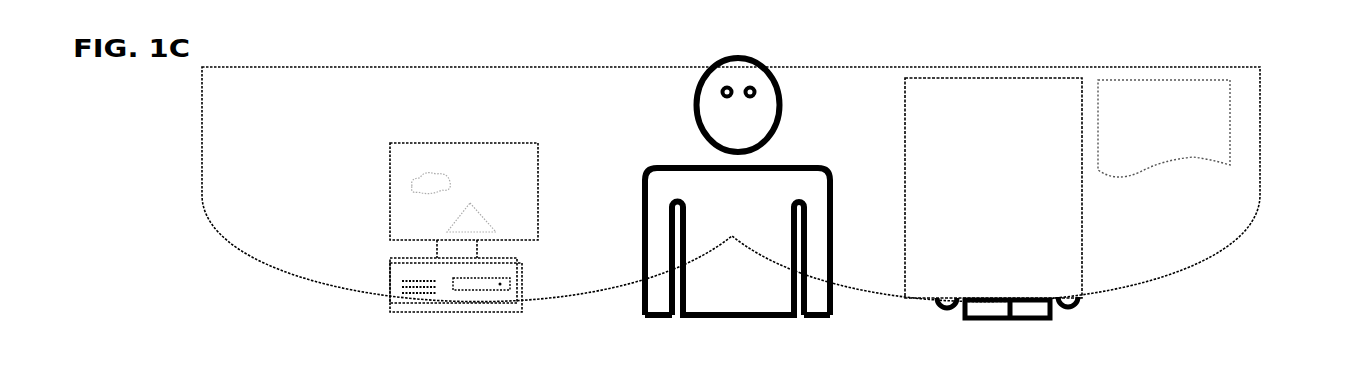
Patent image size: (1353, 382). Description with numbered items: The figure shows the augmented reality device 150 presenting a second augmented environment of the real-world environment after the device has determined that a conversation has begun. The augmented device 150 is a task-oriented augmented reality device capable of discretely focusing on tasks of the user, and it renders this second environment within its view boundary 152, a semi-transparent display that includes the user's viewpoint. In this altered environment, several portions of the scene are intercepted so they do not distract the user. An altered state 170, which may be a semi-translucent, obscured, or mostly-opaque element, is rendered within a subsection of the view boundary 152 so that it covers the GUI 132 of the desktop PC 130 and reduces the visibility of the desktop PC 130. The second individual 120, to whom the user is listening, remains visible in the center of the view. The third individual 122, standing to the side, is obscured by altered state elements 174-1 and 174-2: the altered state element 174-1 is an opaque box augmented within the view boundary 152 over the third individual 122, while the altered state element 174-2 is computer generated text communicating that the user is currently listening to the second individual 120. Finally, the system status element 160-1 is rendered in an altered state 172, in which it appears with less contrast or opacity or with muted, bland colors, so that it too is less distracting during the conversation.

The augmented reality device 150 is at (674, 184).
The view boundary 152 is at (259, 106).
The altered state 170 is at (449, 236).
The GUI 132 is at (372, 181).
The desktop PC 130 is at (540, 270).
The second individual 120 is at (750, 217).
The altered state element 174-1 is at (985, 107).
The altered state element 174-2 is at (992, 222).
The third individual 122 is at (1100, 198).
The altered state 172 is at (1215, 111).
The system status element 160-1 is at (1194, 128).